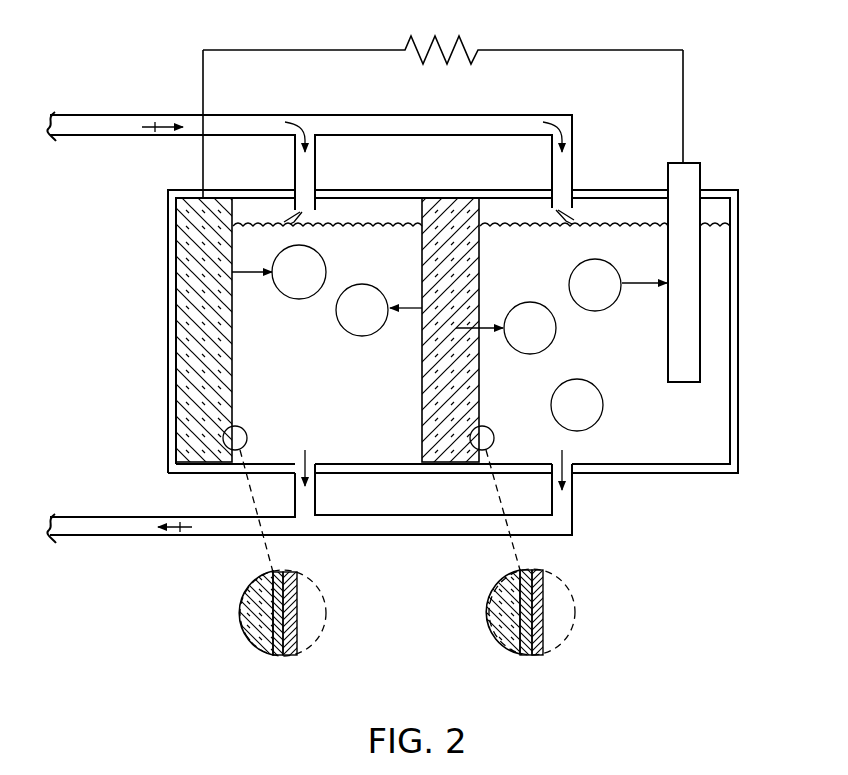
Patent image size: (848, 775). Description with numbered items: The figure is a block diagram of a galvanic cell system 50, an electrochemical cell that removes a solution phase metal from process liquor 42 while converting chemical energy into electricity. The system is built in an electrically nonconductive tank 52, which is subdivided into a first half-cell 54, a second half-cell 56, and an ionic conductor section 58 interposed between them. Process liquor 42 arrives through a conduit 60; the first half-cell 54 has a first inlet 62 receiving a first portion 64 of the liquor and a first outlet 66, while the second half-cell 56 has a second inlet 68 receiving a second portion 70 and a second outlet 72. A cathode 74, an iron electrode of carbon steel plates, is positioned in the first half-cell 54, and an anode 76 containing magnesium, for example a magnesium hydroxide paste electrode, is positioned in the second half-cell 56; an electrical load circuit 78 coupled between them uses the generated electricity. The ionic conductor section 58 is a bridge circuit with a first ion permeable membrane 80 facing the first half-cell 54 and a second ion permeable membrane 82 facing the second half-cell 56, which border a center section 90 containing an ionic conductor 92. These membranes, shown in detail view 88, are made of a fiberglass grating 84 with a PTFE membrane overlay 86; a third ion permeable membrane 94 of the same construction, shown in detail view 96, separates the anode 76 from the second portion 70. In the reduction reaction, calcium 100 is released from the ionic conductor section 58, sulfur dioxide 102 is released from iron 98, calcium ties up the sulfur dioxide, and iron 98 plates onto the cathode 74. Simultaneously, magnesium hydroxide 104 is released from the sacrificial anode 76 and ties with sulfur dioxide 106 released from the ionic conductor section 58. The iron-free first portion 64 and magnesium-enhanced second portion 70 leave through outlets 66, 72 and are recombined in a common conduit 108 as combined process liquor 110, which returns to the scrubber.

The process liquor 42 is at (155, 133).
The galvanic cell system 50 is at (668, 675).
The tank 52 is at (740, 340).
The first half-cell 54 is at (525, 205).
The second half-cell 56 is at (377, 205).
The ionic conductor section 58 is at (450, 205).
The conduit 60 is at (100, 115).
The first inlet 62 is at (575, 208).
The first portion 64 is at (712, 226).
The first outlet 66 is at (574, 494).
The second inlet 68 is at (290, 222).
The second portion 70 is at (252, 226).
The second outlet 72 is at (326, 504).
The cathode 74 is at (700, 256).
The anode 76 is at (190, 322).
The electrical load circuit 78 is at (462, 42).
The first ion permeable membrane 80 is at (480, 272).
The second ion permeable membrane 82 is at (422, 264).
The fiberglass grating 84 is at (290, 658).
The PTFE membrane overlay 86 is at (276, 656).
The detail view 88 is at (578, 612).
The center section 90 is at (458, 466).
The ionic conductor 92 is at (470, 374).
The third ion permeable membrane 94 is at (292, 572).
The detail view 96 is at (330, 612).
The iron 98 is at (620, 300).
The calcium 100 is at (548, 346).
The sulfur dioxide 102 is at (604, 405).
The magnesium hydroxide 104 is at (300, 300).
The sulfur dioxide 106 is at (358, 336).
The common conduit 108 is at (406, 537).
The combined process liquor 110 is at (182, 536).